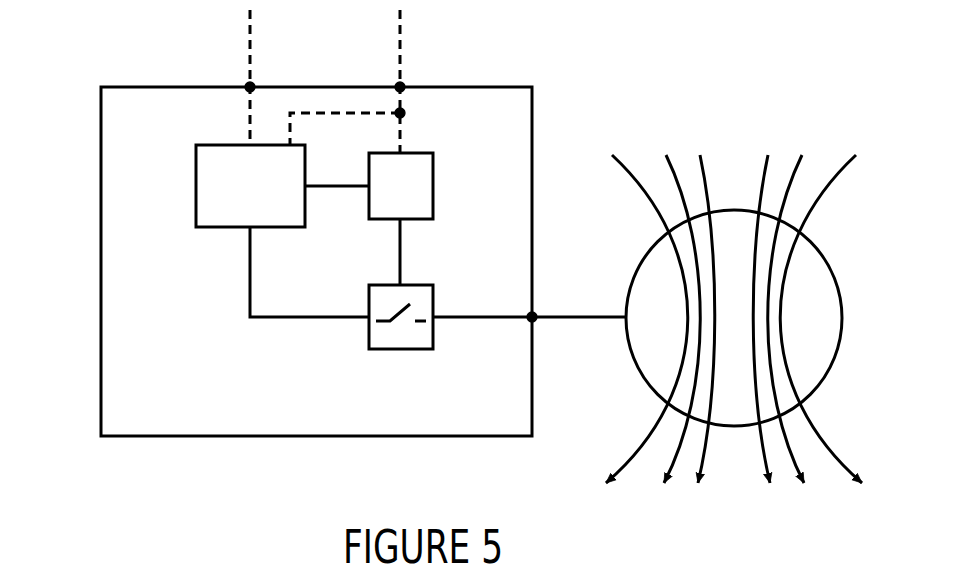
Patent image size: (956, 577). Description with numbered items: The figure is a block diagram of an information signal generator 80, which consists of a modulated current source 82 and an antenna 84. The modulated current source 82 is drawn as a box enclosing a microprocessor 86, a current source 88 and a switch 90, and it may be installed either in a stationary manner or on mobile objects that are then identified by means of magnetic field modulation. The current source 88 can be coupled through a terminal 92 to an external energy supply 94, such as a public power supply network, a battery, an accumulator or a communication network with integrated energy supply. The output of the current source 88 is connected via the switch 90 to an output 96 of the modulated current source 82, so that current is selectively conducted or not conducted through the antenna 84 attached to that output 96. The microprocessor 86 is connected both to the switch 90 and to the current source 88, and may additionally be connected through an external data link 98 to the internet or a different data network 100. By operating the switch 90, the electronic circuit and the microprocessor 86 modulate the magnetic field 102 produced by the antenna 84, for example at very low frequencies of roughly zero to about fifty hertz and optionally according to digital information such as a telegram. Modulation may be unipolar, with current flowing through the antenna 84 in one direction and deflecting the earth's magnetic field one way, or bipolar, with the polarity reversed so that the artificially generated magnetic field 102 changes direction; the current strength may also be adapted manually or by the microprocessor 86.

The information signal generator 80 is at (645, 34).
The modulated current source 82 is at (101, 262).
The antenna 84 is at (845, 318).
The microprocessor 86 is at (433, 183).
The current source 88 is at (196, 188).
The switch 90 is at (401, 350).
The terminal 92 is at (253, 85).
The external energy supply 94 is at (250, 28).
The output 96 is at (534, 320).
The external data link 98 is at (398, 85).
The data network 100 is at (402, 20).
The magnetic field 102 is at (832, 442).